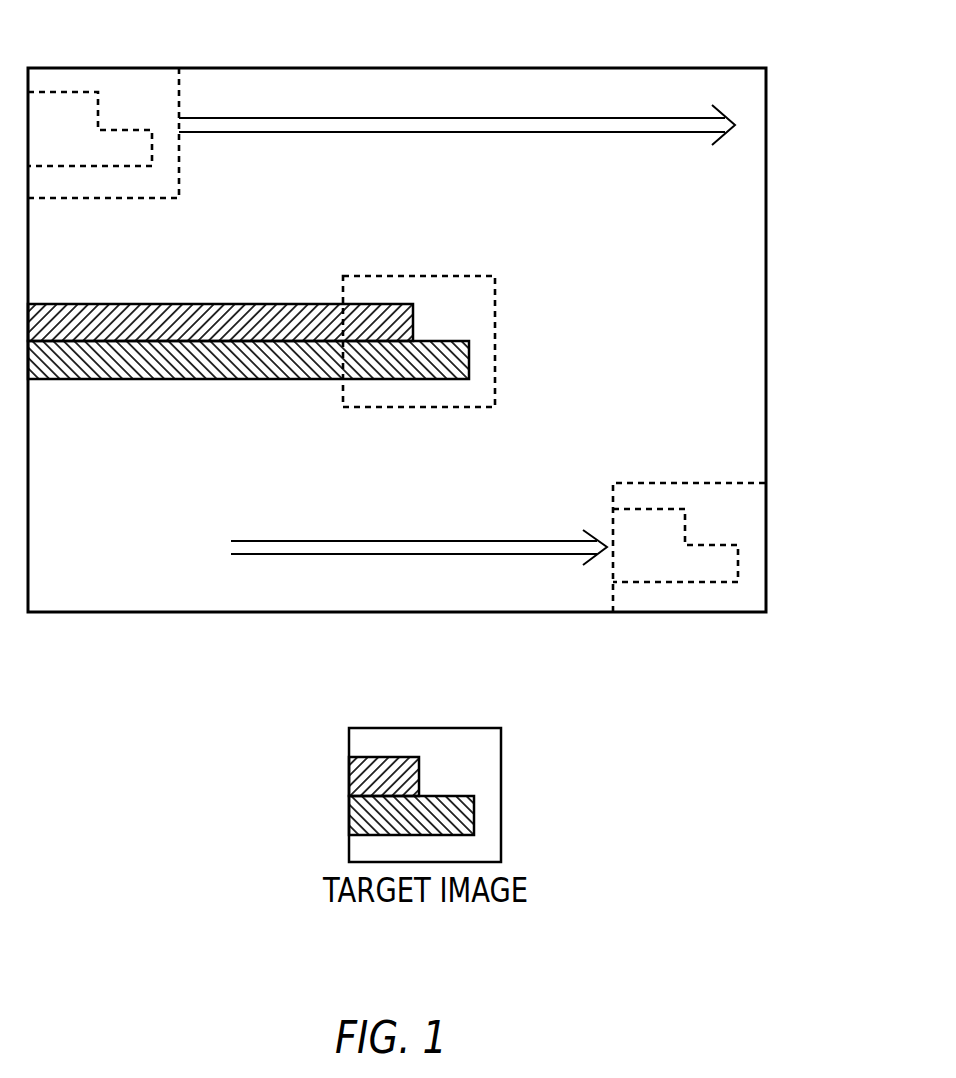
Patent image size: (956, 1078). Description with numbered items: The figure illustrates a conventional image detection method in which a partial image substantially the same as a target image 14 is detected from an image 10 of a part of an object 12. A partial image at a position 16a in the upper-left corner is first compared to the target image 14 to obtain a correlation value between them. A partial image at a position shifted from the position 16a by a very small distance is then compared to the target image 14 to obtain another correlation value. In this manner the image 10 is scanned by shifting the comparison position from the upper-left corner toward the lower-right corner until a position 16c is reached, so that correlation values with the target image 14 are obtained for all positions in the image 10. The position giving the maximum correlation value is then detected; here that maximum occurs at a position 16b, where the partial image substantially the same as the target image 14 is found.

The image 10 is at (767, 197).
The object 12 is at (268, 304).
The target image 14 is at (503, 793).
The position 16a is at (133, 68).
The position 16b is at (496, 343).
The position 16c is at (755, 548).